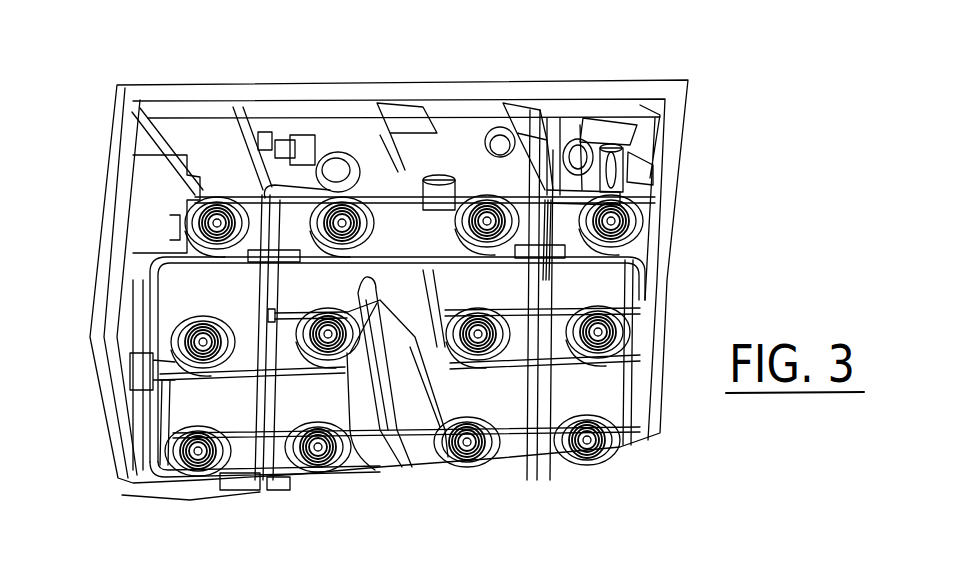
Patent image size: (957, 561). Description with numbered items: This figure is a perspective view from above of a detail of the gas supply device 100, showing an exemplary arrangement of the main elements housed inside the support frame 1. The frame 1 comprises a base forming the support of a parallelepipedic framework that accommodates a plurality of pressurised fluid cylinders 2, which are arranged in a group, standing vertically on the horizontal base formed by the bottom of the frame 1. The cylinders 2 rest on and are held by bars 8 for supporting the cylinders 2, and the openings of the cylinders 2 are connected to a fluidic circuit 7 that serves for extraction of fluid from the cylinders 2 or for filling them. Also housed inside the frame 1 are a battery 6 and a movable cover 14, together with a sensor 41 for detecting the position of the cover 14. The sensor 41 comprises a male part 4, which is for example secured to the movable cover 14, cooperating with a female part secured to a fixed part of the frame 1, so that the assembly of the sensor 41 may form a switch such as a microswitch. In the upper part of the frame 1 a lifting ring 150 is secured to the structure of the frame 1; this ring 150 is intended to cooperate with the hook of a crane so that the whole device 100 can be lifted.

The support frame 1 is at (122, 170).
The pressurised fluid cylinders 2 is at (622, 281).
The male part 4 is at (412, 188).
The battery 6 is at (153, 180).
The fluidic circuit 7 is at (147, 337).
The bars 8 is at (590, 305).
The cover 14 is at (640, 140).
The sensor 41 is at (660, 173).
The gas supply device 100 is at (753, 166).
The lifting ring 150 is at (343, 473).